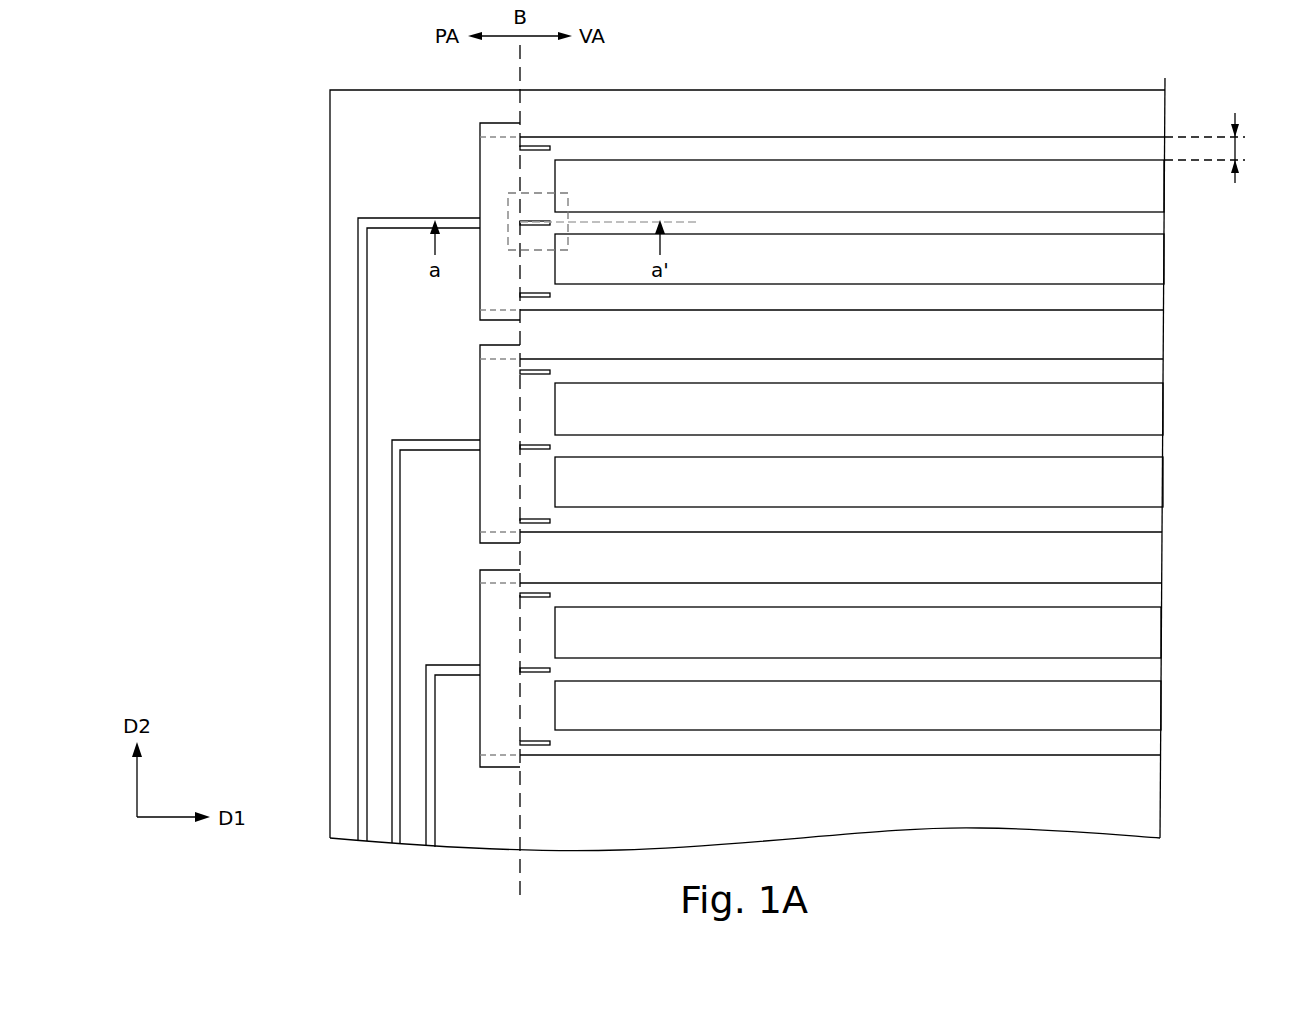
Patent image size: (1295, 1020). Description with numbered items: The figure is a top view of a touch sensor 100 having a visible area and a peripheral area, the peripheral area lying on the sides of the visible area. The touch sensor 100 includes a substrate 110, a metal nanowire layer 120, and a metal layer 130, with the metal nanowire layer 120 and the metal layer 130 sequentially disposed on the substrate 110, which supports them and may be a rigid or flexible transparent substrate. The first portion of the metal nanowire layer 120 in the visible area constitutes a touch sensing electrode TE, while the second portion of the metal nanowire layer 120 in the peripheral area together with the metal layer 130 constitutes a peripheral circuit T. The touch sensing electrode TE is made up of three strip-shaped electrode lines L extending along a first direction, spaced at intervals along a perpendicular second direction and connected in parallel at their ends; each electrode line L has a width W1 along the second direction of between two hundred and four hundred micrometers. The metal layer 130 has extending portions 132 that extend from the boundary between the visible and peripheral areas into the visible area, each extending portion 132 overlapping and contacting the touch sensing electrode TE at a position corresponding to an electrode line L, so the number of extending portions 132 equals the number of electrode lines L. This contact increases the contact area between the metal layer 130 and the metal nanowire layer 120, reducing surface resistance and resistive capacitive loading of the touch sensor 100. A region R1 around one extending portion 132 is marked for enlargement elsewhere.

The touch sensor 100 is at (128, 29).
The substrate 110 is at (330, 164).
The metal nanowire layer 120 is at (1155, 223).
The metal layer 130 is at (492, 128).
The extending portion 132 is at (535, 146).
The electrode line L is at (1030, 146).
The peripheral circuit T is at (346, 335).
The touch sensing electrode TE is at (1166, 148).
The region R1 is at (565, 194).
The width W1 is at (1224, 148).